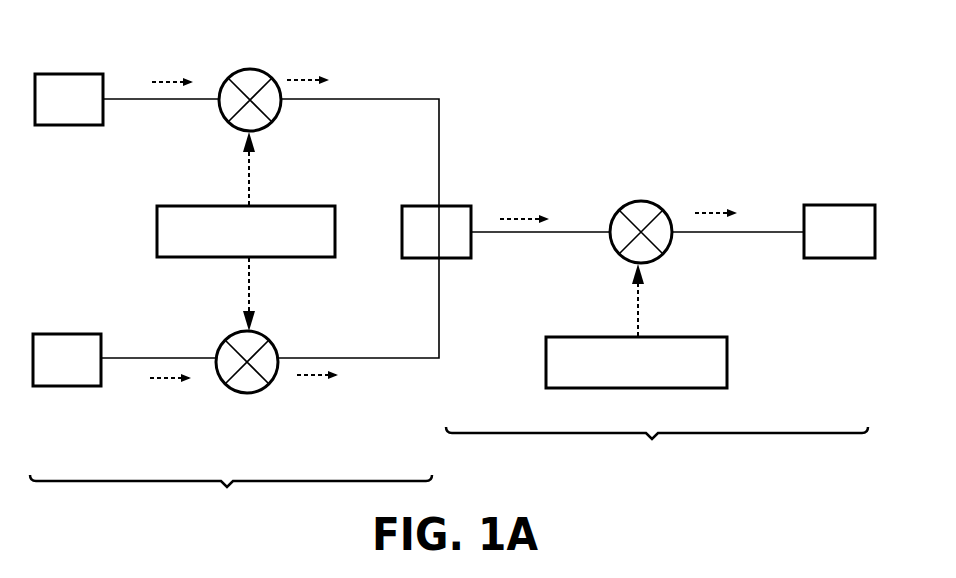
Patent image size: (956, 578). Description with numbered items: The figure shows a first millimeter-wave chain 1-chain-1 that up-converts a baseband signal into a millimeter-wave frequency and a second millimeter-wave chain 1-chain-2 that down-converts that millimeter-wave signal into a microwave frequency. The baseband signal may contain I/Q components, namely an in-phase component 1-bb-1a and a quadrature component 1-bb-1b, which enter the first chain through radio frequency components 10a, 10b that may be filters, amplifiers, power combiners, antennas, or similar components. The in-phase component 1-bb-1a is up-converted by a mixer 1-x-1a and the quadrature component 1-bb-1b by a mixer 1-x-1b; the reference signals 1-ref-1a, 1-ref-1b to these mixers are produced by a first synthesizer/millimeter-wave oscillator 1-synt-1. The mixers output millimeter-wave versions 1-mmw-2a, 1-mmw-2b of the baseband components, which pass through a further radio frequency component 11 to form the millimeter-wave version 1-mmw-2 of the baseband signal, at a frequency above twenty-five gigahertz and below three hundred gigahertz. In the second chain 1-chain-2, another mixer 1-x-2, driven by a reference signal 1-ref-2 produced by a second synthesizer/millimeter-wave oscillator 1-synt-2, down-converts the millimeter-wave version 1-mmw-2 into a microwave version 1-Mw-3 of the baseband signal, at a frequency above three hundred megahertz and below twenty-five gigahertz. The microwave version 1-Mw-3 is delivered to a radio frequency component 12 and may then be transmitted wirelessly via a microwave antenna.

The radio frequency component 10a is at (90, 111).
The radio frequency component 10b is at (45, 372).
The radio frequency component 11 is at (421, 246).
The radio frequency component 12 is at (823, 244).
The first synthesizer/millimeter-wave oscillator 1-synt-1 is at (196, 247).
The second synthesizer/millimeter-wave oscillator 1-synt-2 is at (586, 379).
The mixer 1-x-1a is at (235, 73).
The mixer 1-x-1b is at (238, 392).
The mixer 1-x-2 is at (625, 207).
The in-phase component 1-bb-1a is at (156, 64).
The quadrature component 1-bb-1b is at (167, 396).
The millimeter-wave version of the baseband signal 1-mmw-2a is at (346, 61).
The millimeter-wave version of the baseband signal 1-mmw-2b is at (362, 391).
The millimeter-wave version of the baseband signal 1-mmw-2 is at (537, 197).
The microwave version of the baseband signal 1-Mw-3 is at (730, 195).
The reference signal 1-ref-1a is at (200, 168).
The reference signal 1-ref-1b is at (200, 294).
The reference signal 1-ref-2 is at (597, 300).
The first millimeter-wave chain 1-chain-1 is at (231, 496).
The second millimeter-wave chain 1-chain-2 is at (657, 448).